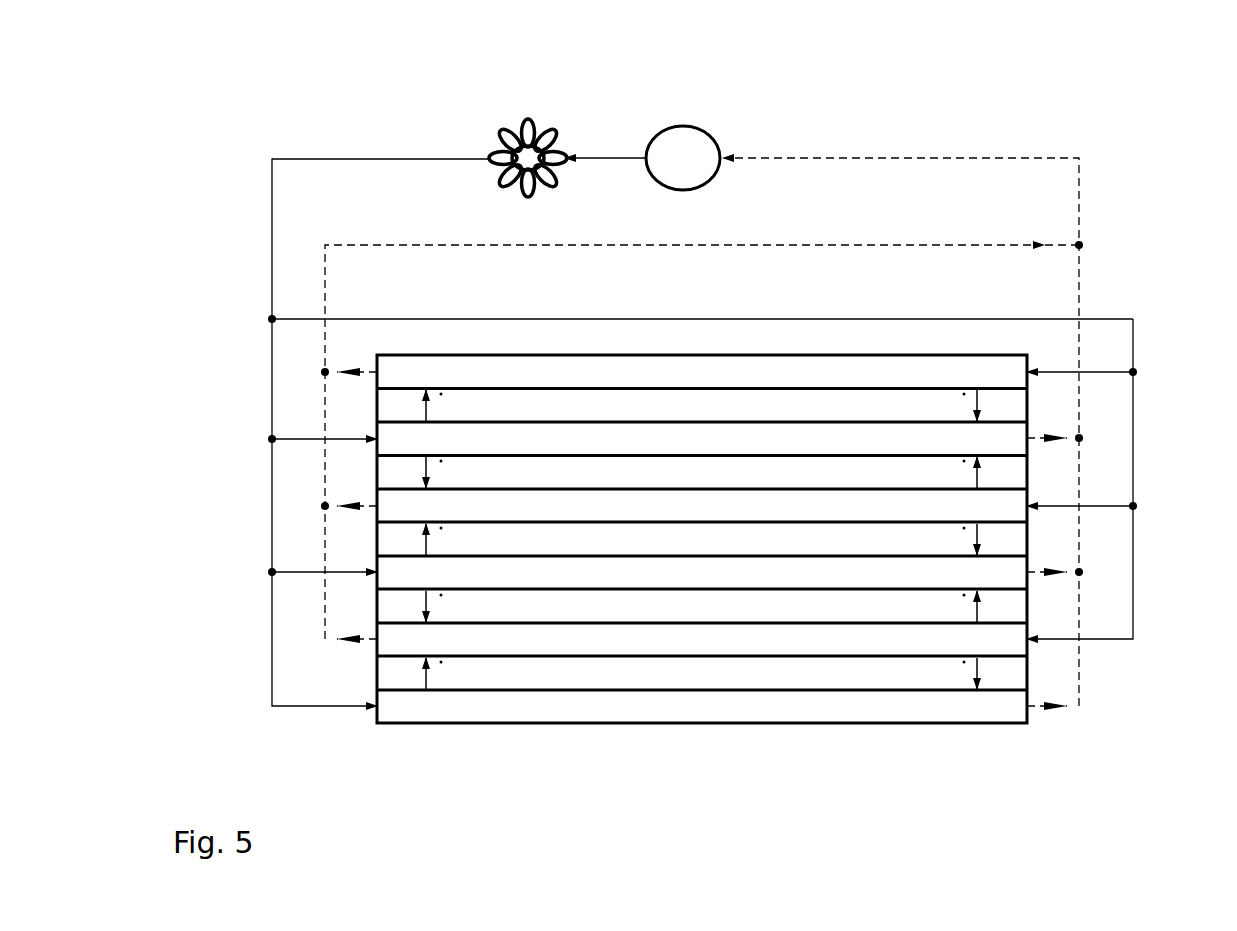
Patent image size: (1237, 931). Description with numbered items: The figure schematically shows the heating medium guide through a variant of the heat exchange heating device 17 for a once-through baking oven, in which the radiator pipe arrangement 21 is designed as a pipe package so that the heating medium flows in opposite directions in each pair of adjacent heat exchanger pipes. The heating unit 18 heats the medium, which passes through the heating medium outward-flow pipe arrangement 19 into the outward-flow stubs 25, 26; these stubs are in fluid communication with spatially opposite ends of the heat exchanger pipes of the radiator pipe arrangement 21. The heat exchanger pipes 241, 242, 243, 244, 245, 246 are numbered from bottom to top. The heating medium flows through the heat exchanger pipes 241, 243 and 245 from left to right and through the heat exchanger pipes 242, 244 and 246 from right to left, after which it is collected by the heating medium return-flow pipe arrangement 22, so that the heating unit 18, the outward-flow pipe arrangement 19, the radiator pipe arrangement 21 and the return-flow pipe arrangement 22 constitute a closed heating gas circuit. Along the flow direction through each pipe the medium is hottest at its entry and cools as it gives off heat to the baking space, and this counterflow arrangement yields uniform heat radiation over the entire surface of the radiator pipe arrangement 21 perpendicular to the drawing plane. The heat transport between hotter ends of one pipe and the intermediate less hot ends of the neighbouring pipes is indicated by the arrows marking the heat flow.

The heat exchange heating device 17 is at (864, 100).
The heating unit 18 is at (718, 107).
The heating medium outward-flow pipe arrangement 19 is at (402, 158).
The radiator pipe arrangement 21 is at (810, 729).
The heating medium return-flow pipe arrangement 22 is at (962, 158).
The heat exchanger pipe 241 is at (392, 711).
The heat exchanger pipe 242 is at (390, 646).
The heat exchanger pipe 243 is at (390, 580).
The heat exchanger pipe 244 is at (390, 513).
The heat exchanger pipe 245 is at (390, 445).
The heat exchanger pipe 246 is at (765, 370).
The outward-flow stub 25 is at (1133, 456).
The outward-flow stub 26 is at (272, 395).